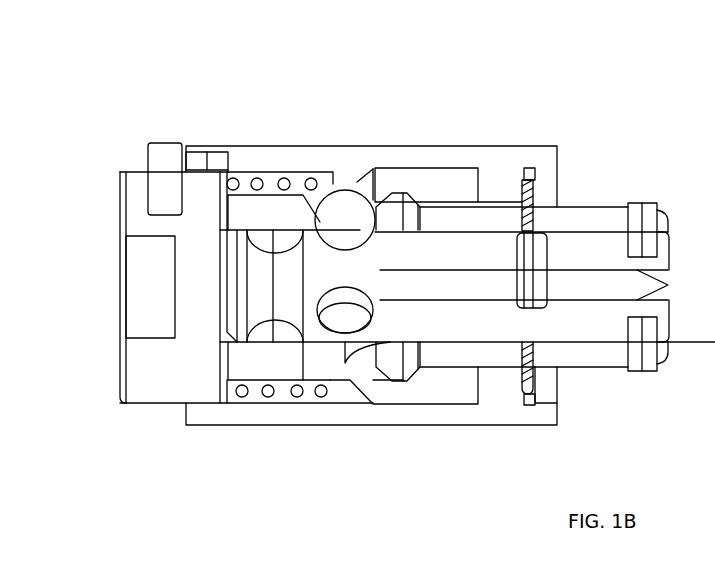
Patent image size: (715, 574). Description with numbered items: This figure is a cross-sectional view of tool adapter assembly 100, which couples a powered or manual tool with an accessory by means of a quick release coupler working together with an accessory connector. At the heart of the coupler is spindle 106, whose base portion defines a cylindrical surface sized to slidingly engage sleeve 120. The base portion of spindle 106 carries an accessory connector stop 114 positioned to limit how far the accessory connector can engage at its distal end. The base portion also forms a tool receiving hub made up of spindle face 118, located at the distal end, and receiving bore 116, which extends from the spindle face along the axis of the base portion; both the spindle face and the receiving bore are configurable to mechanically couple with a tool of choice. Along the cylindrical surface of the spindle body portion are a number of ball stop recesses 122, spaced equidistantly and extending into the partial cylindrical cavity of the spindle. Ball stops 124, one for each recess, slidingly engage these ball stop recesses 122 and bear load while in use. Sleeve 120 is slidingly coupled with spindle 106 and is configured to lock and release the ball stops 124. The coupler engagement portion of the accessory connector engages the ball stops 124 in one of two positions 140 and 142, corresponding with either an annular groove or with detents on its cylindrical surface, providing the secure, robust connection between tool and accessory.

The tool adapter assembly 100 is at (603, 48).
The spindle 106 is at (137, 202).
The accessory connector stop 114 is at (218, 302).
The receiving bore 116 is at (135, 305).
The spindle face 118 is at (117, 205).
The sleeve 120 is at (251, 147).
The ball stop recesses 122 is at (378, 203).
The ball stops 124 is at (340, 200).
The first ball stop engagement position 140 is at (350, 247).
The second ball stop engagement position 142 is at (267, 323).